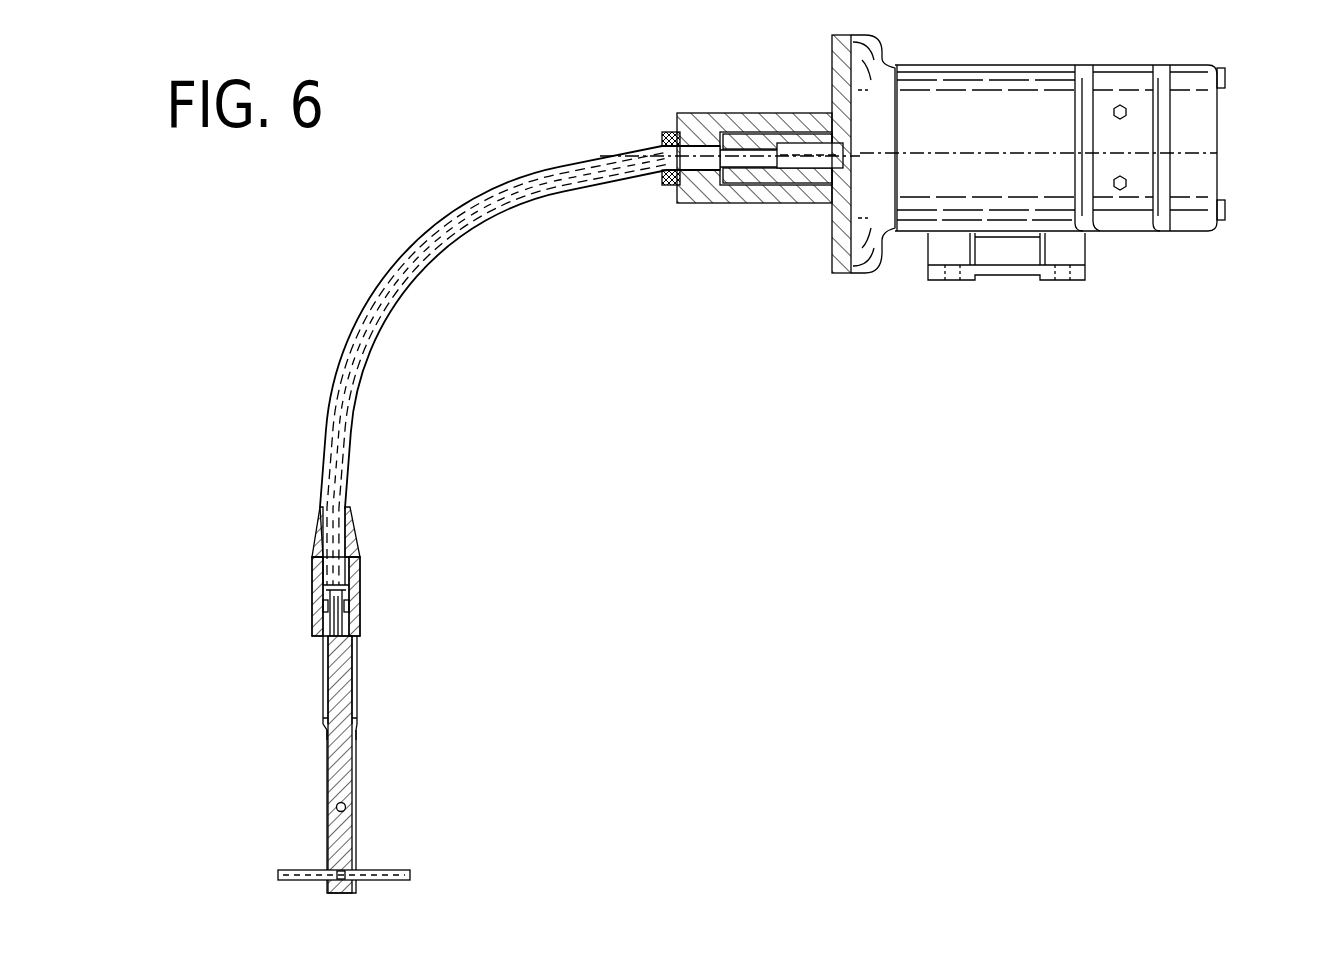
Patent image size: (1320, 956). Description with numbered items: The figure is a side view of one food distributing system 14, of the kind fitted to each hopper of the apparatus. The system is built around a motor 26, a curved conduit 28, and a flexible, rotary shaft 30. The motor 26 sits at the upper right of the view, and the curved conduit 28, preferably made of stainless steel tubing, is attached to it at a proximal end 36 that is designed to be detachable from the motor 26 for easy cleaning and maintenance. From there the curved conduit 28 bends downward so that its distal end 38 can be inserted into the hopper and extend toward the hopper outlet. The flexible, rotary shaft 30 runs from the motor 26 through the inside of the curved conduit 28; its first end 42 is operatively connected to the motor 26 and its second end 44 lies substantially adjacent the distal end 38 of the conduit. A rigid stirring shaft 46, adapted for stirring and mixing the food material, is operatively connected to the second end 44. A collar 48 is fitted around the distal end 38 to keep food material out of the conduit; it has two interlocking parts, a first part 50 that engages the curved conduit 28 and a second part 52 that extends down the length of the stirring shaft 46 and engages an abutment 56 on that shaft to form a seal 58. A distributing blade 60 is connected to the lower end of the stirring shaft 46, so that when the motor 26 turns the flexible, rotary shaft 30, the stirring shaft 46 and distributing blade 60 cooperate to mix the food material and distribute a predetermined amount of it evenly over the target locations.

The food distributing system 14 is at (520, 349).
The motor 26 is at (1224, 145).
The curved conduit 28 is at (366, 286).
The flexible, rotary shaft 30 is at (384, 314).
The proximal end 36 is at (652, 146).
The distal end 38 is at (352, 508).
The first end 42 is at (690, 165).
The second end 44 is at (354, 613).
The stirring shaft 46 is at (358, 768).
The collar 48 is at (359, 695).
The first part 50 is at (364, 543).
The second part 52 is at (359, 668).
The abutment 56 is at (361, 727).
The seal 58 is at (318, 727).
The distributing blade 60 is at (404, 867).